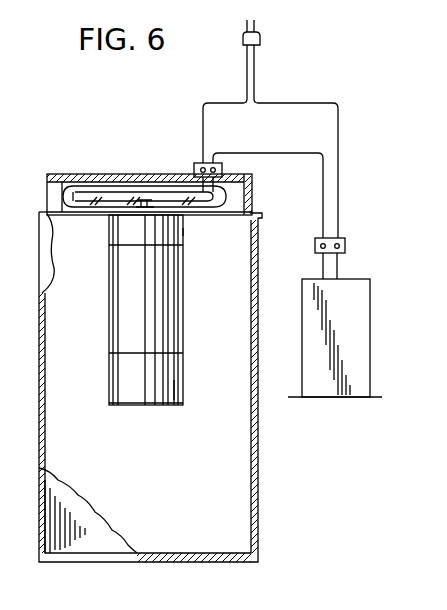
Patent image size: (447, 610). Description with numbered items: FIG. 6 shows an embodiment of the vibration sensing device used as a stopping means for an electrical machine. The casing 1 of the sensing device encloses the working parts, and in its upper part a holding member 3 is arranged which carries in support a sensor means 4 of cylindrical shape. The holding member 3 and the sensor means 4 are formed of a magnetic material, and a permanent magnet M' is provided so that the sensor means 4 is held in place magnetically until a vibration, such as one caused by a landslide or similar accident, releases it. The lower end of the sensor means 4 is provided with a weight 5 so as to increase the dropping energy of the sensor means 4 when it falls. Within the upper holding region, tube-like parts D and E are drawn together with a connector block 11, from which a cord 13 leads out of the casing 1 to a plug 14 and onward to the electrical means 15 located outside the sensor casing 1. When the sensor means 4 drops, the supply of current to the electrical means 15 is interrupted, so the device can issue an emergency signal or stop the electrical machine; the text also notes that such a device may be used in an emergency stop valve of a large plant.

The casing 1 is at (42, 318).
The holding member 3 is at (258, 222).
The sensor means 4 is at (176, 317).
The weight 5 is at (178, 378).
The connector block 11 is at (228, 192).
The cord 13 is at (225, 105).
The plug 14 is at (260, 40).
The electrical means 15 is at (370, 347).
The outer tube D is at (104, 188).
The inner tube E is at (161, 194).
The permanent magnet M' is at (198, 242).